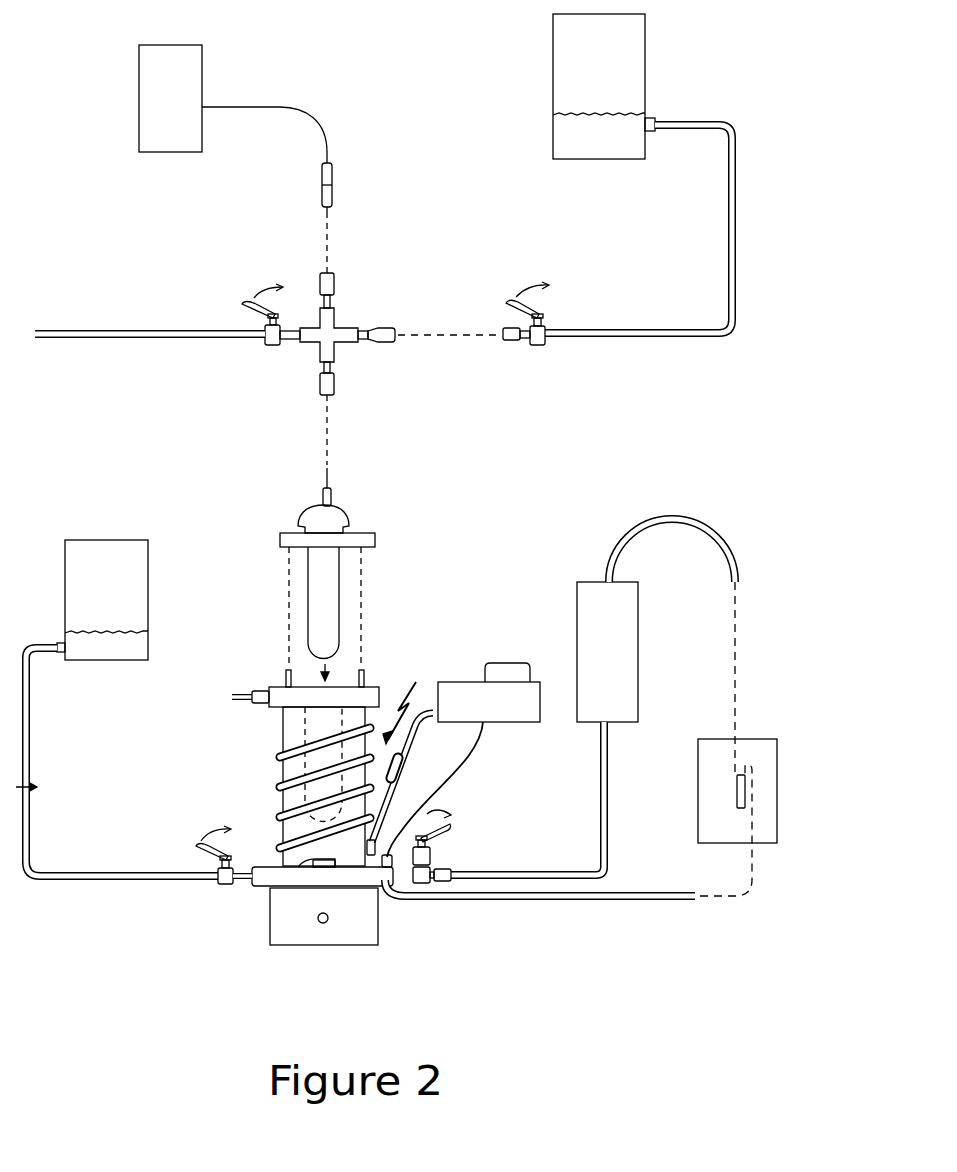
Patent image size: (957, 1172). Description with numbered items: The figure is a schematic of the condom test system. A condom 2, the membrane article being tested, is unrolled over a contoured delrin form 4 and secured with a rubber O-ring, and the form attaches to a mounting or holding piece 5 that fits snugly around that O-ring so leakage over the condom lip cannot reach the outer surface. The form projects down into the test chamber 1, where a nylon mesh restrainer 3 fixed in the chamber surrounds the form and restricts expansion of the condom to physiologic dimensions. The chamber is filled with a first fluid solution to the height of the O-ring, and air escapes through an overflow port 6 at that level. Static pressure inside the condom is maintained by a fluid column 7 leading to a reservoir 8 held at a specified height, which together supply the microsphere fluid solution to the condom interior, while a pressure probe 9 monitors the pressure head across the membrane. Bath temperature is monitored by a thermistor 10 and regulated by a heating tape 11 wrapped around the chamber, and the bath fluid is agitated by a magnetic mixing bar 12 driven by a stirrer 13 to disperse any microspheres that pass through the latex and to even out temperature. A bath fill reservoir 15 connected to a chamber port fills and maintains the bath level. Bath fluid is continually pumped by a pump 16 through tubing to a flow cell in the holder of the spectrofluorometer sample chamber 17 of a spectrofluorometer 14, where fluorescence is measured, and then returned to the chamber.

The test chamber 1 is at (416, 682).
The condom 2 is at (340, 613).
The nylon mesh restrainer 3 is at (290, 800).
The contoured delrin form 4 is at (318, 580).
The mounting or holding piece 5 is at (360, 530).
The overflow port 6 is at (232, 697).
The fluid column 7 is at (615, 340).
The reservoir 8 is at (591, 88).
The pressure probe 9 is at (162, 114).
The thermistor 10 is at (477, 714).
The heating tape 11 is at (278, 757).
The magnetic mixing bar 12 is at (313, 860).
The stirrer 13 is at (272, 937).
The spectrofluorometer 14 is at (777, 778).
The bath fill reservoir 15 is at (94, 606).
The pump 16 is at (595, 659).
The spectrofluorometer sample chamber 17 is at (738, 790).